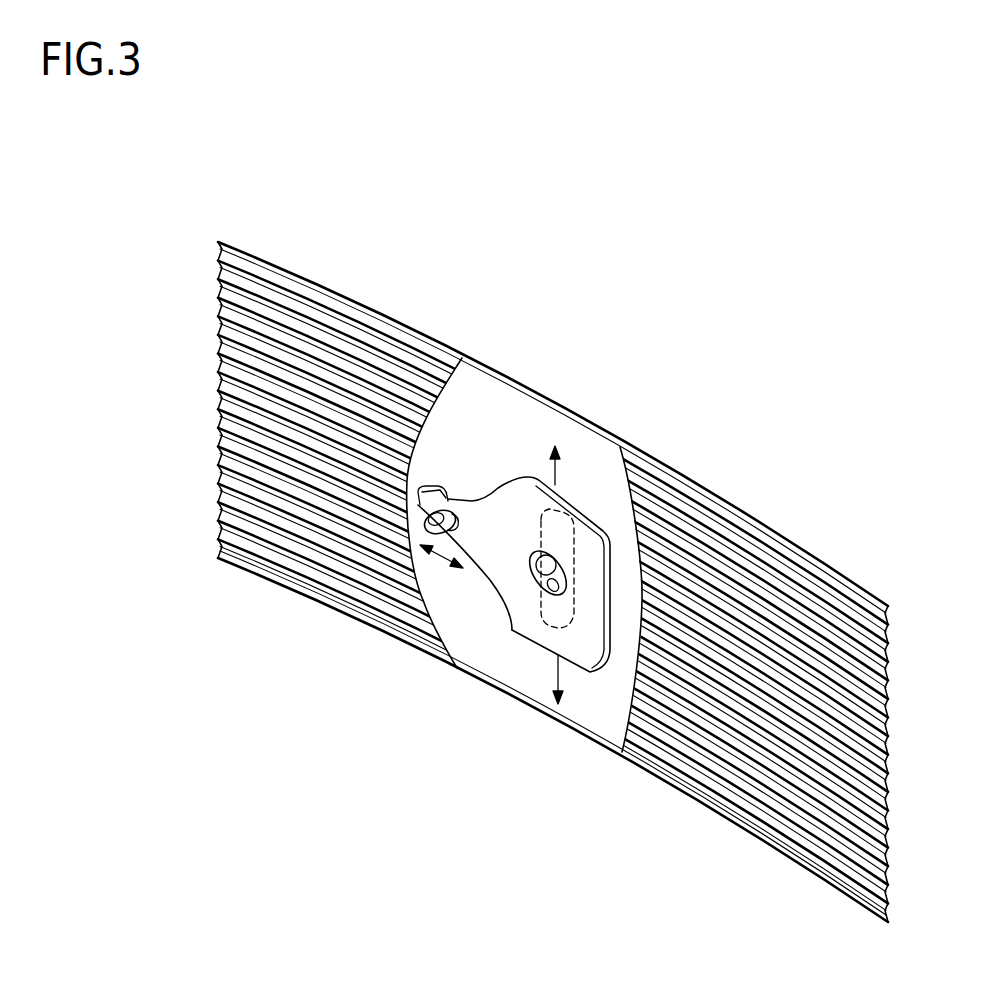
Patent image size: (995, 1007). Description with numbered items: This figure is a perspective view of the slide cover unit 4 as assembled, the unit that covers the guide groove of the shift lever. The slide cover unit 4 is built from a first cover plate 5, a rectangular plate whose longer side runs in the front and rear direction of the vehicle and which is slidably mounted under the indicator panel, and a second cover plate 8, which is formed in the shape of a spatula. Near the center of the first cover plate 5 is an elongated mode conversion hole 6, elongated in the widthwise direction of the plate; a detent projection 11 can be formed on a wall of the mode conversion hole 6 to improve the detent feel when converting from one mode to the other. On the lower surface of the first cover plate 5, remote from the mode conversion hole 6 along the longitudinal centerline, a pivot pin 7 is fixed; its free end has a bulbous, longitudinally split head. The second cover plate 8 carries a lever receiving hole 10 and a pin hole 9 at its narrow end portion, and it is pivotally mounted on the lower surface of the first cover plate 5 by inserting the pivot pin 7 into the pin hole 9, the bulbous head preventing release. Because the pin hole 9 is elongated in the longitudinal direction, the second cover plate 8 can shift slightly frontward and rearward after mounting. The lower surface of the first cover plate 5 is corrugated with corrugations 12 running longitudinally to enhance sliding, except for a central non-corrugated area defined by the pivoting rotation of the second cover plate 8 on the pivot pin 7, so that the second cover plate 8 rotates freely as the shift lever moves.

The slide cover unit 4 is at (846, 488).
The first cover plate 5 is at (312, 281).
The mode conversion hole 6 is at (559, 527).
The pivot pin 7 is at (442, 513).
The second cover plate 8 is at (570, 652).
The pin hole 9 is at (425, 548).
The lever receiving hole 10 is at (513, 623).
The detent projection 11 is at (566, 556).
The corrugations 12 is at (220, 490).